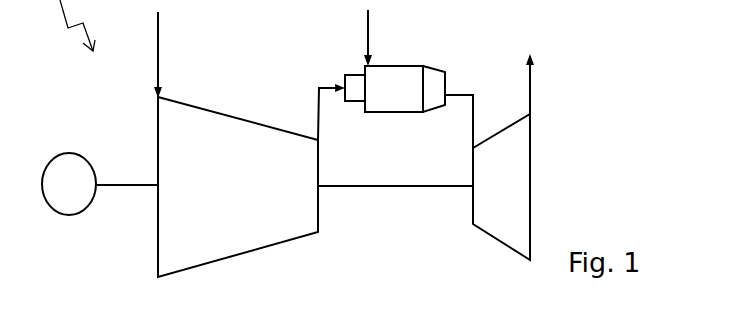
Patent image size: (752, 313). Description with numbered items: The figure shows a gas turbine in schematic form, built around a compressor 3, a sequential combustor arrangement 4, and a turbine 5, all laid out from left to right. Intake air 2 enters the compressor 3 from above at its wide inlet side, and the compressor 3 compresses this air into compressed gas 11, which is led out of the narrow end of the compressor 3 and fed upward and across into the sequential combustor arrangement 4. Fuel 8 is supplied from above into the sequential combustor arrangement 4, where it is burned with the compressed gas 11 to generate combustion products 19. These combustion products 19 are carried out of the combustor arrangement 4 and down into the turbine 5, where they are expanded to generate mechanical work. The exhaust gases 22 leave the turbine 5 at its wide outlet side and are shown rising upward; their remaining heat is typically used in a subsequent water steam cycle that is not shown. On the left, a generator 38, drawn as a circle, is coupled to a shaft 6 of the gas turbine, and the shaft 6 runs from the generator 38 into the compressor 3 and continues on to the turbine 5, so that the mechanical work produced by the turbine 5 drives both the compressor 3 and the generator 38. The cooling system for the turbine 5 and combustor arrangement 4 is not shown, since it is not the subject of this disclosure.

The intake air 2 is at (148, 55).
The compressor 3 is at (238, 187).
The sequential combustor arrangement 4 is at (402, 66).
The turbine 5 is at (501, 187).
The shaft 6 is at (127, 172).
The fuel 8 is at (378, 38).
The compressed gas 11 is at (316, 108).
The combustion products 19 is at (470, 109).
The exhaust gases 22 is at (549, 84).
The generator 38 is at (69, 184).